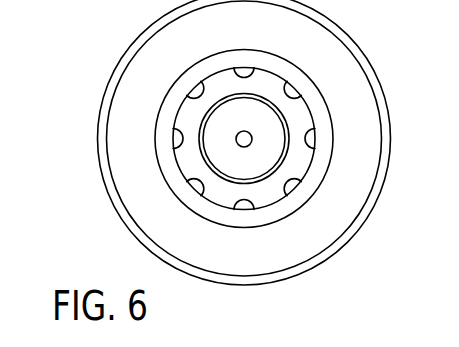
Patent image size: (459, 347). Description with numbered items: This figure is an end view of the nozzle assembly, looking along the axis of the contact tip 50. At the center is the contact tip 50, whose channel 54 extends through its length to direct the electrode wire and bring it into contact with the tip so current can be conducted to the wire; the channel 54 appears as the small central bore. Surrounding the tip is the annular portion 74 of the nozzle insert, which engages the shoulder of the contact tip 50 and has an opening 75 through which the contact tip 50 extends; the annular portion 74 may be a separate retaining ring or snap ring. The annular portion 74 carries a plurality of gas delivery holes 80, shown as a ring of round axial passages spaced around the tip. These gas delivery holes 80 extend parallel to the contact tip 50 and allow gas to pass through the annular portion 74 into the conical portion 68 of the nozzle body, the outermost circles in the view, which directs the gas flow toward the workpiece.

The contact tip 50 is at (221, 142).
The channel 54 is at (251, 146).
The conical portion 68 is at (123, 113).
The annular portion 74 is at (267, 85).
The opening 75 is at (201, 125).
The gas delivery holes 80 is at (298, 84).